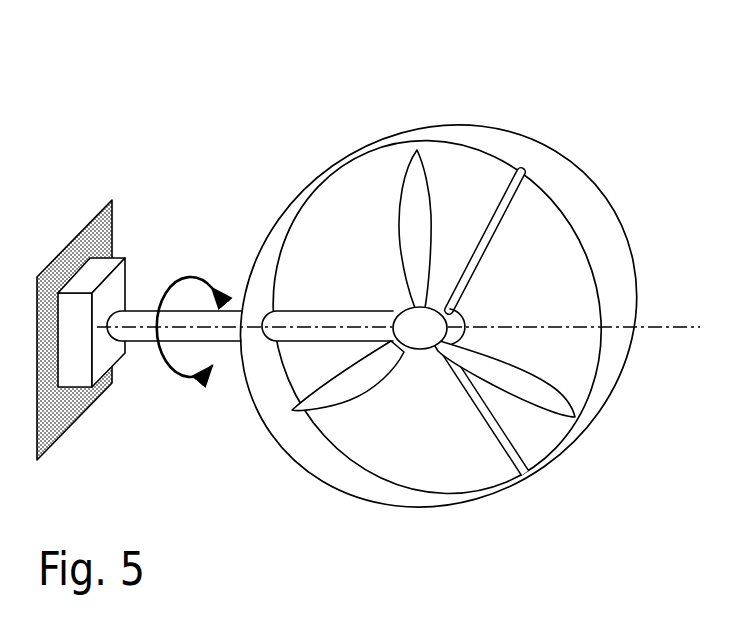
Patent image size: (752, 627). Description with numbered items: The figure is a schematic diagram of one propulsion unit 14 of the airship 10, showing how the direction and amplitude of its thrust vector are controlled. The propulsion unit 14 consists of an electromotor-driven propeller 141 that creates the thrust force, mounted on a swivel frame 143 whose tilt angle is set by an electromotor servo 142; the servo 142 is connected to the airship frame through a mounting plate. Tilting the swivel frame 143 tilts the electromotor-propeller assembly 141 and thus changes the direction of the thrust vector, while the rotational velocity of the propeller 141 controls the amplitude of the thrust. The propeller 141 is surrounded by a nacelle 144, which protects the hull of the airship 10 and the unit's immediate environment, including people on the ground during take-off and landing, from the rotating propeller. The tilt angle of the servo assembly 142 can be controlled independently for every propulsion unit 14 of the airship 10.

The airship 10 is at (67, 242).
The propulsion unit 14 is at (404, 311).
The propeller 141 is at (517, 383).
The electromotor servo 142 is at (122, 362).
The swivel frame 143 is at (152, 307).
The nacelle 144 is at (463, 138).